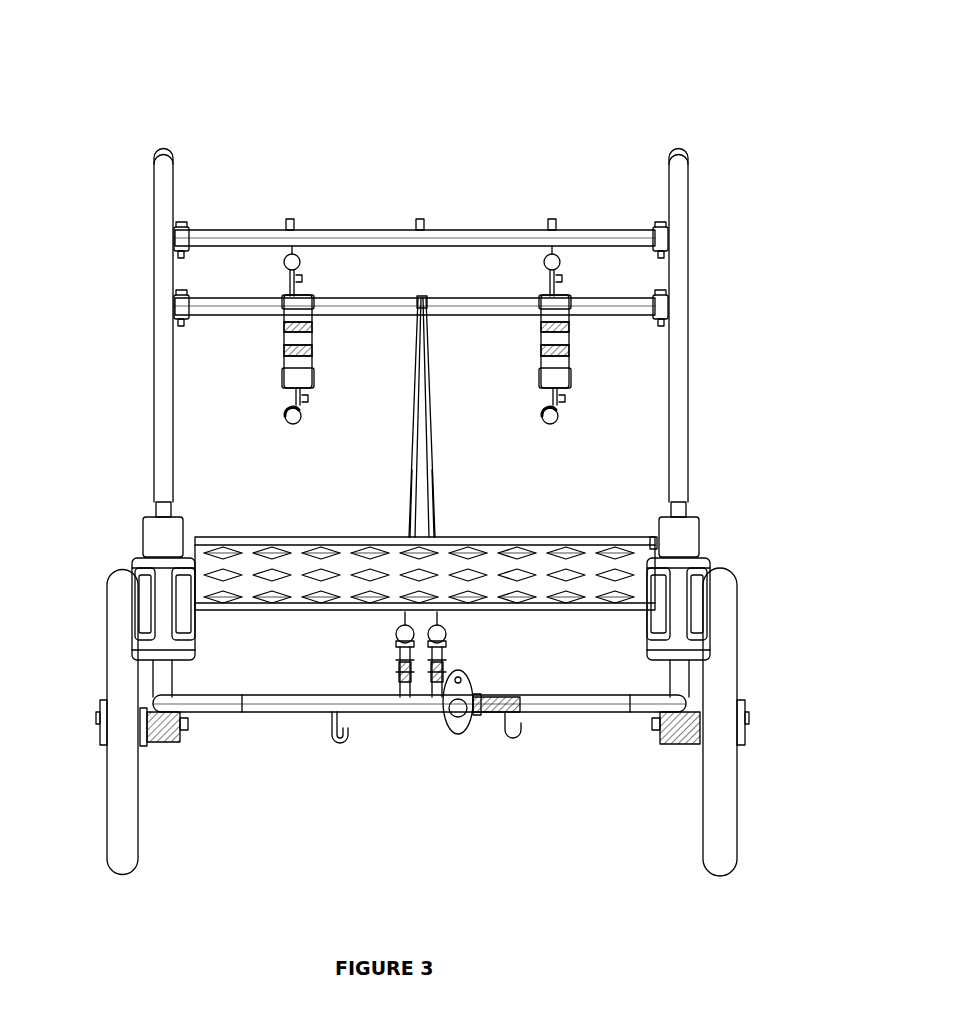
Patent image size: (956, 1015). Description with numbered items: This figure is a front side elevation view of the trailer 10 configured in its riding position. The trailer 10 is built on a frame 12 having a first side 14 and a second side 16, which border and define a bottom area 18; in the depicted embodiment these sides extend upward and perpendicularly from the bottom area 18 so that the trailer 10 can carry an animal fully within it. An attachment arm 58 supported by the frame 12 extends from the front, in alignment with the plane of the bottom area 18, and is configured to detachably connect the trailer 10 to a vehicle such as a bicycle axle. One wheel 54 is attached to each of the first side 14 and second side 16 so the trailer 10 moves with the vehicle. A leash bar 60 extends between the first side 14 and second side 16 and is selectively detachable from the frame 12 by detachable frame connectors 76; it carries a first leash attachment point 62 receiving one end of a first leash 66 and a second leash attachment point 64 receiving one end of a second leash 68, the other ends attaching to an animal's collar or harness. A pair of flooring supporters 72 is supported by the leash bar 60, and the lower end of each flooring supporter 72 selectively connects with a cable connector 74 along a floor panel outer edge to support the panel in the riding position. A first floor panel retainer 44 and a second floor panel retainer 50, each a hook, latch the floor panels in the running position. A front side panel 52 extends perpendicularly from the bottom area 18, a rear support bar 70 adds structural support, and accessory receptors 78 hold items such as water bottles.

The trailer 10 is at (433, 50).
The frame 12 is at (163, 190).
The first side 14 is at (680, 685).
The second side 16 is at (162, 678).
The bottom area 18 is at (260, 768).
The first floor panel retainer 44 is at (510, 740).
The second floor panel retainer 50 is at (337, 745).
The front side panel 52 is at (205, 560).
The wheel 54 is at (130, 820).
The attachment arm 58 is at (603, 712).
The leash bar 60 is at (362, 232).
The first leash attachment point 62 is at (552, 255).
The second leash attachment point 64 is at (292, 260).
The first leash 66 is at (554, 424).
The second leash 68 is at (292, 424).
The rear support bar 70 is at (483, 300).
The flooring supporter 72 is at (410, 455).
The cable connector 74 is at (404, 712).
The detachable frame connectors 76 is at (182, 237).
The accessory receptors 78 is at (148, 578).